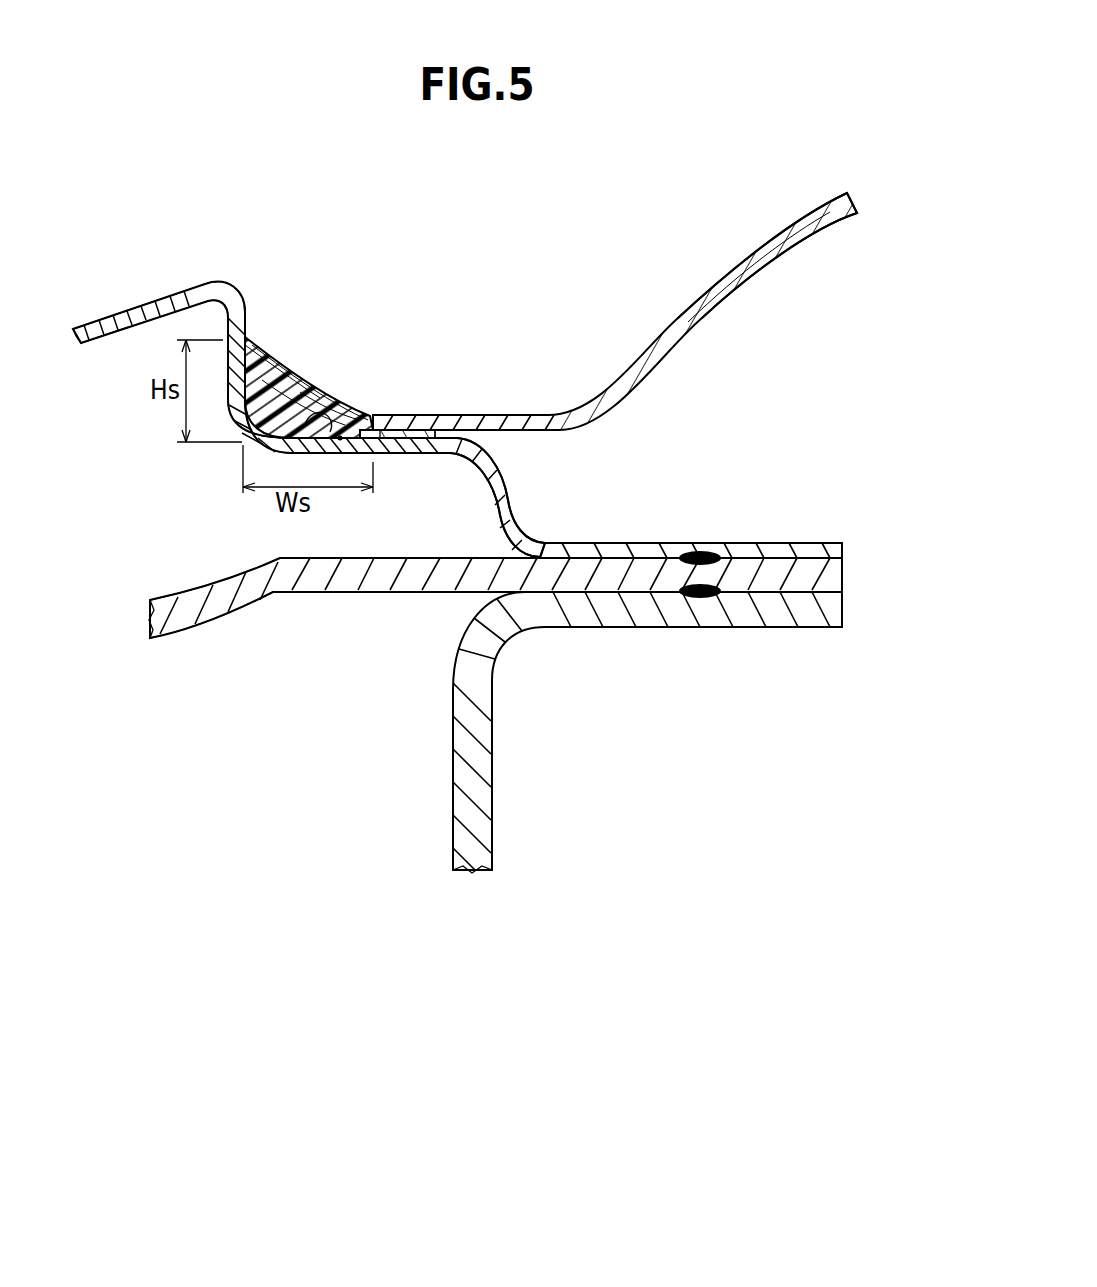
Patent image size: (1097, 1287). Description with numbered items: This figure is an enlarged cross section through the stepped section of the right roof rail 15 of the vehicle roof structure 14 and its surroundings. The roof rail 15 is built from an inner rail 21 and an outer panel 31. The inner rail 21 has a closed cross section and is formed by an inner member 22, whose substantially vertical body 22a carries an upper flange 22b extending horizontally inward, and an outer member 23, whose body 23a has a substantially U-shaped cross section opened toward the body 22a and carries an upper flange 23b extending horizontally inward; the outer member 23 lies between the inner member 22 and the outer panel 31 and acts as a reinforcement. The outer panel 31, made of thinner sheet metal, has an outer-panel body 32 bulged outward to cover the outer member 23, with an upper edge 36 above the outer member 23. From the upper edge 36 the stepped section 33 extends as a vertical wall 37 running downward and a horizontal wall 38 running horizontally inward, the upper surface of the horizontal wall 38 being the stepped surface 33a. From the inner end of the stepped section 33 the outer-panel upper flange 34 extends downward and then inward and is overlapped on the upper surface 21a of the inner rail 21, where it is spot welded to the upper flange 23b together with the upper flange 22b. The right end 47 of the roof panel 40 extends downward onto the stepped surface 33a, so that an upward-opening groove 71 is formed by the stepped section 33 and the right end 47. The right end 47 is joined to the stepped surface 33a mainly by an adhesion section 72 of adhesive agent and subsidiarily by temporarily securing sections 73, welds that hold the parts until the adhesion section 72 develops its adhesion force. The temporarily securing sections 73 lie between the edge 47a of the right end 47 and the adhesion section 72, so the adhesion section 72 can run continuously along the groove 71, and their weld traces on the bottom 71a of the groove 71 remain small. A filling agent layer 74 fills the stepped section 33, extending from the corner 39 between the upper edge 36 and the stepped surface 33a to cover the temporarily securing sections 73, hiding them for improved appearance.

The vehicle roof structure 14 is at (757, 128).
The roof rail 15 is at (153, 220).
The inner rail 21 is at (495, 778).
The upper surface of the inner rail 21a is at (475, 557).
The inner member 22 is at (493, 845).
The body of the inner member 22a is at (482, 730).
The upper flange of the inner member 22b is at (757, 620).
The outer member 23 is at (182, 640).
The body of the outer member 23a is at (217, 612).
The upper flange of the outer member 23b is at (783, 570).
The outer panel 31 is at (88, 320).
The outer-panel body 32 is at (160, 305).
The stepped section 33 is at (252, 166).
The stepped surface 33a is at (377, 438).
The outer-panel upper flange 34 is at (765, 550).
The upper edge of the outer-panel body 36 is at (213, 283).
The vertical wall 37 is at (245, 345).
The horizontal wall 38 is at (270, 385).
The corner 39 is at (230, 405).
The roof panel 40 is at (733, 270).
The right end of the roof panel 47 is at (455, 425).
The edge of the right end 47a is at (320, 410).
The groove 71 is at (415, 328).
The bottom of the groove 71a is at (490, 415).
The adhesion section 72 is at (418, 430).
The temporarily securing section 73 is at (340, 440).
The filling agent layer 74 is at (313, 395).